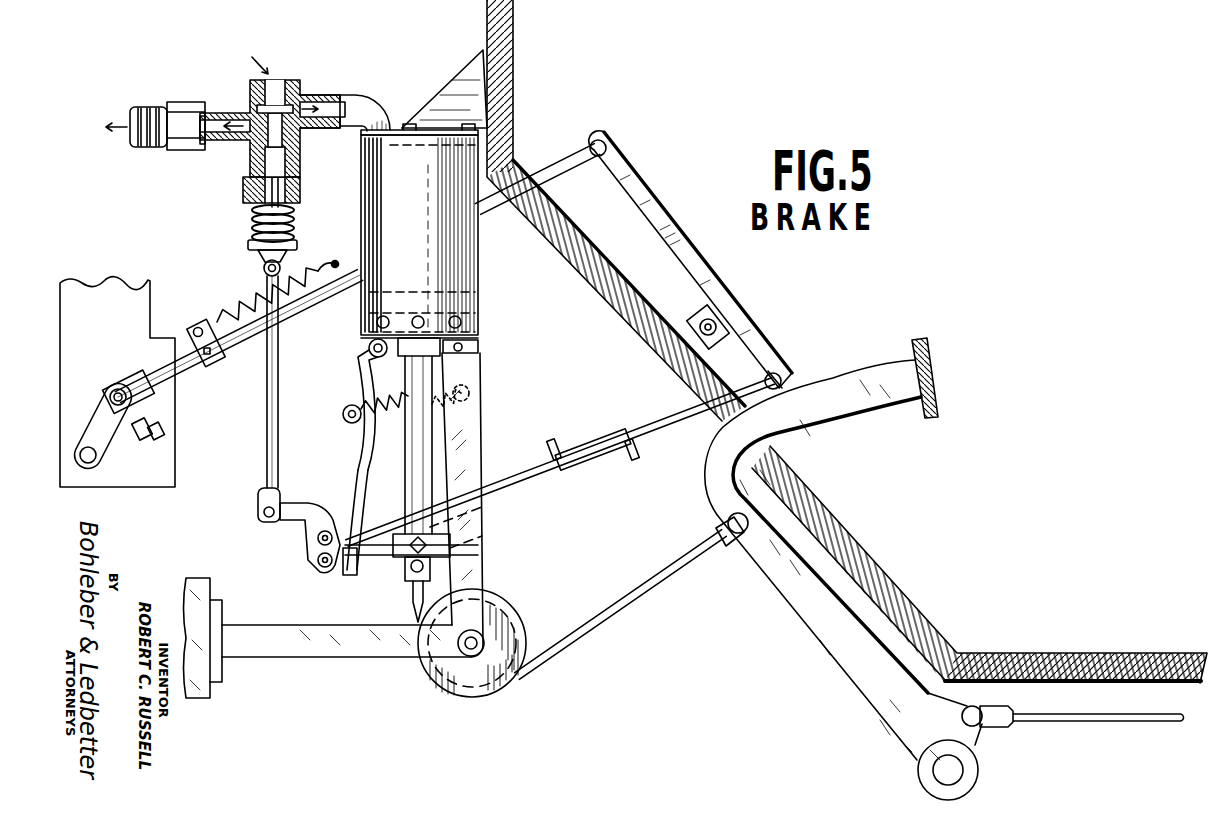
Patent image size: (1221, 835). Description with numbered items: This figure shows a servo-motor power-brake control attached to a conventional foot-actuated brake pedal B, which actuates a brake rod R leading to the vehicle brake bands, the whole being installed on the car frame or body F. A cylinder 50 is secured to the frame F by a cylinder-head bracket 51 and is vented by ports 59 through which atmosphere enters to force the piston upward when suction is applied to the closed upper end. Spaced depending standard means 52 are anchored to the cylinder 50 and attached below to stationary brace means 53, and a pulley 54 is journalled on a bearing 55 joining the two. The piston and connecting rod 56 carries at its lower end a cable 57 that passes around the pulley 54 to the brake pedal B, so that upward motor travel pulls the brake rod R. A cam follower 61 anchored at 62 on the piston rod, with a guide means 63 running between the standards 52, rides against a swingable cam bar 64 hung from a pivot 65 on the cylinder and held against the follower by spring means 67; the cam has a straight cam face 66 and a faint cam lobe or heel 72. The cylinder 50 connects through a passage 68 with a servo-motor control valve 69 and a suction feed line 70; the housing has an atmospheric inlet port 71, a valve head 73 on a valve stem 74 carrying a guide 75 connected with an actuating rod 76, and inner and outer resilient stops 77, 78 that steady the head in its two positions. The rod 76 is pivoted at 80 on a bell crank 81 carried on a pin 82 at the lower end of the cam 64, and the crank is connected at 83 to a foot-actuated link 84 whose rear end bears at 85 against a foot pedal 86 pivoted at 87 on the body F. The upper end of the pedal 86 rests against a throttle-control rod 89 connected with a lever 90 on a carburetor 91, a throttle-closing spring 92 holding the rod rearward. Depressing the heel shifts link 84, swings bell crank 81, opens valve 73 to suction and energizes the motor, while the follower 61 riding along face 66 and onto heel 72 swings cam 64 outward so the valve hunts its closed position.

The cylinder 50 is at (456, 258).
The cylinder-head bracket 51 is at (481, 70).
The depending standard means 52 is at (474, 420).
The stationary brace means 53 is at (344, 650).
The pulley 54 is at (468, 688).
The bearing 55 is at (481, 639).
The piston and connecting rod 56 is at (422, 467).
The cable 57 is at (649, 581).
The ports 59 is at (465, 313).
The cam follower 61 is at (378, 545).
The cam follower anchorage 62 is at (413, 548).
The guide means 63 is at (463, 543).
The cam bar 64 is at (355, 368).
The pivot 65 is at (375, 350).
The straight cam face 66 is at (360, 573).
The spring means 67 is at (389, 400).
The passage 68 is at (345, 100).
The servo-motor control valve 69 is at (302, 138).
The motive-fluid feed line 70 is at (143, 140).
The atmospheric inlet port 71 is at (273, 100).
The cam lobe or heel 72 is at (373, 434).
The valve head 73 is at (256, 103).
The valve stem 74 is at (275, 137).
The valve guide 75 is at (243, 185).
The actuating rod 76 is at (266, 412).
The inner resilient stop means 77 is at (257, 195).
The outer resilient stop 78 is at (248, 228).
The pivot 80 is at (263, 515).
The bell crank 81 is at (307, 508).
The pin 82 is at (318, 540).
The pivotal connection 83 is at (318, 562).
The foot-actuated link 84 is at (658, 430).
The heel bearing point 85 is at (782, 377).
The foot pedal 86 is at (671, 221).
The pedal pivot 87 is at (702, 318).
The throttle-control rod 89 is at (184, 367).
The carburetor lever 90 is at (114, 437).
The carburetor 91 is at (112, 283).
The throttle-closing spring 92 is at (310, 270).
The brake pedal B is at (872, 400).
The car frame or body F is at (890, 585).
The brake rod R is at (1068, 722).